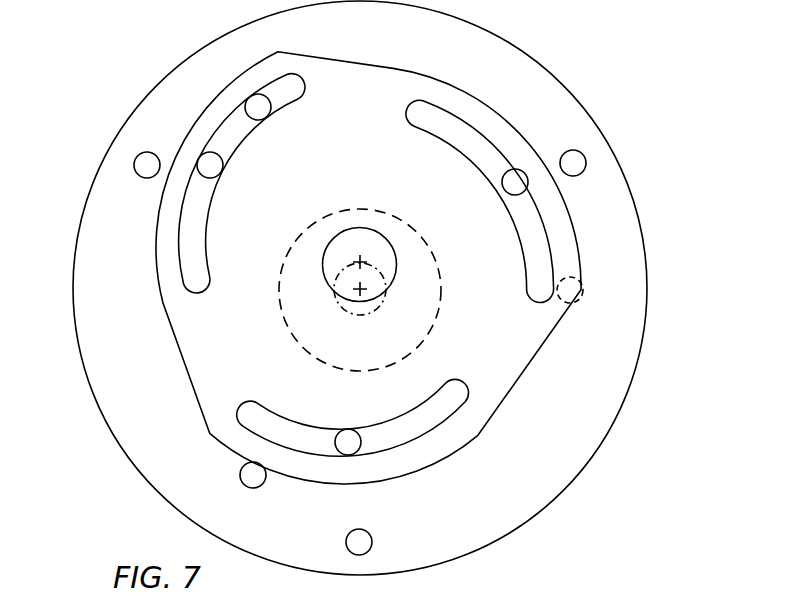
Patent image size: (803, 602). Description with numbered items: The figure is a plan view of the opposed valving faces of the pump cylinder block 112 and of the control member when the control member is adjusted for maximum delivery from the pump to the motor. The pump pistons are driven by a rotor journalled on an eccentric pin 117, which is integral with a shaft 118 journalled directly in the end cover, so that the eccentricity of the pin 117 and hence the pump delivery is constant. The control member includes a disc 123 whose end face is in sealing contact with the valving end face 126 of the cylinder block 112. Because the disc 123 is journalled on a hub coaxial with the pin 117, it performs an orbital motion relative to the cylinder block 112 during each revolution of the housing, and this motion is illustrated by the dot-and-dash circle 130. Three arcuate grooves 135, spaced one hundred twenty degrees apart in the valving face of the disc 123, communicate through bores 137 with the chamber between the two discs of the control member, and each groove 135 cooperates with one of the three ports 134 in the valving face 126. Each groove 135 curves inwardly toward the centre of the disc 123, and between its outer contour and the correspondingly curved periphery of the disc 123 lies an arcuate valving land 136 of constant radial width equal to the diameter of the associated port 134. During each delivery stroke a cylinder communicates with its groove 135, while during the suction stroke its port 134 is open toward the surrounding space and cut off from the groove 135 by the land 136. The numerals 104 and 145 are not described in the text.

The axis / center point 104 is at (345, 298).
The pump cylinder block 112 is at (642, 230).
The eccentric pin 117 is at (375, 243).
The shaft 118 is at (438, 275).
The disc 123 is at (208, 383).
The valving end face 126 is at (527, 80).
The dot-and-dash circle 130 is at (383, 289).
The port 134 is at (260, 110).
The arcuate groove 135 is at (192, 238).
The valving land 136 is at (170, 242).
The bore 137 is at (213, 165).
The fastener hole 145 is at (145, 168).